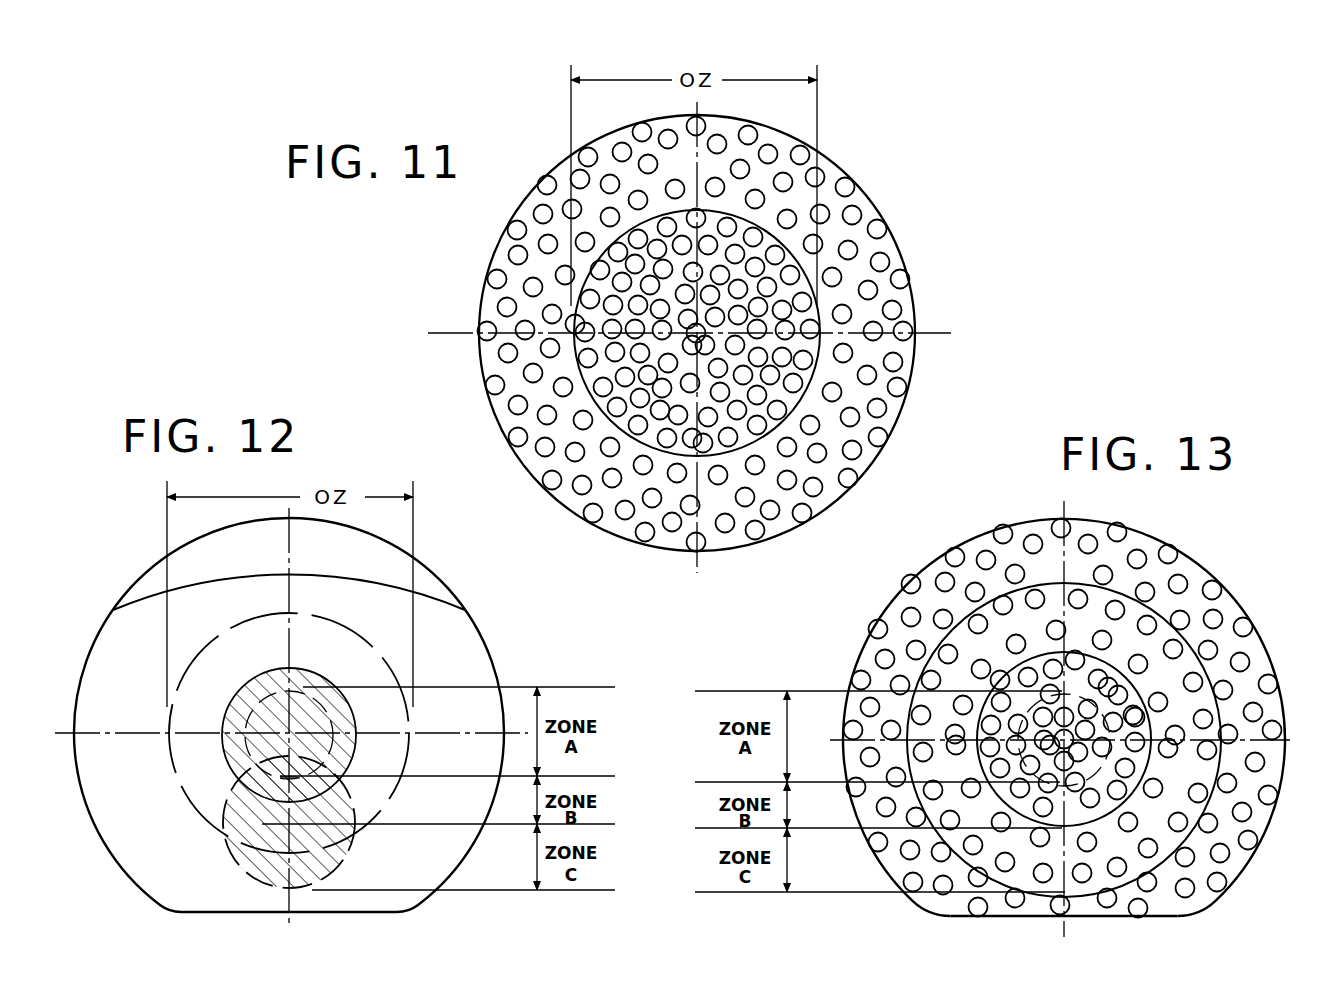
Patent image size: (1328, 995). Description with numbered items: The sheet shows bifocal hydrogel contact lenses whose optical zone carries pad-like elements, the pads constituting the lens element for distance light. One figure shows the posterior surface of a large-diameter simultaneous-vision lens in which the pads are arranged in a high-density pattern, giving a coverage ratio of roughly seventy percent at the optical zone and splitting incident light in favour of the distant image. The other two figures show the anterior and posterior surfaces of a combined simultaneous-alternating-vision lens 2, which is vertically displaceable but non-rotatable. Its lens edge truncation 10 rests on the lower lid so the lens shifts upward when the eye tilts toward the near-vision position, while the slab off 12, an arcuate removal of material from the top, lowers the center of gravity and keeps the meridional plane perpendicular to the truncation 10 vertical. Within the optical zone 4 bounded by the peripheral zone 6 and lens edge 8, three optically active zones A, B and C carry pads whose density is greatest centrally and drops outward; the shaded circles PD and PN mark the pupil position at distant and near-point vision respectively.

In FIG. 11, the abrasive grinding wheel body 2 is at (892, 208).
In FIG. 12, the abrasive grinding wheel body 2 is at (496, 640).
In FIG. 13, the abrasive grinding wheel body 2 is at (1052, 733).
In FIG. 11, the abrasive particle 4 is at (893, 366).
In FIG. 13, the abrasive particle 4 is at (1243, 663).
In FIG. 11, the outer zone of abrasive particles 6 is at (508, 374).
In FIG. 12, the outer zone of abrasive particles 6 is at (289, 733).
In FIG. 13, the outer zone of abrasive particles 6 is at (1163, 571).
In FIG. 11, the outer peripheral edge 8 is at (498, 243).
In FIG. 12, the outer peripheral edge 8 is at (289, 715).
In FIG. 13, the outer peripheral edge 8 is at (863, 645).
In FIG. 12, the lens edge truncation 10 is at (228, 913).
In FIG. 13, the lens edge truncation 10 is at (1130, 916).
In FIG. 12, the slab off 12 is at (147, 585).
In FIG. 12, the pupil position at distant vision PD is at (245, 700).
In FIG. 12, the pupil position at near-point vision PN is at (243, 858).